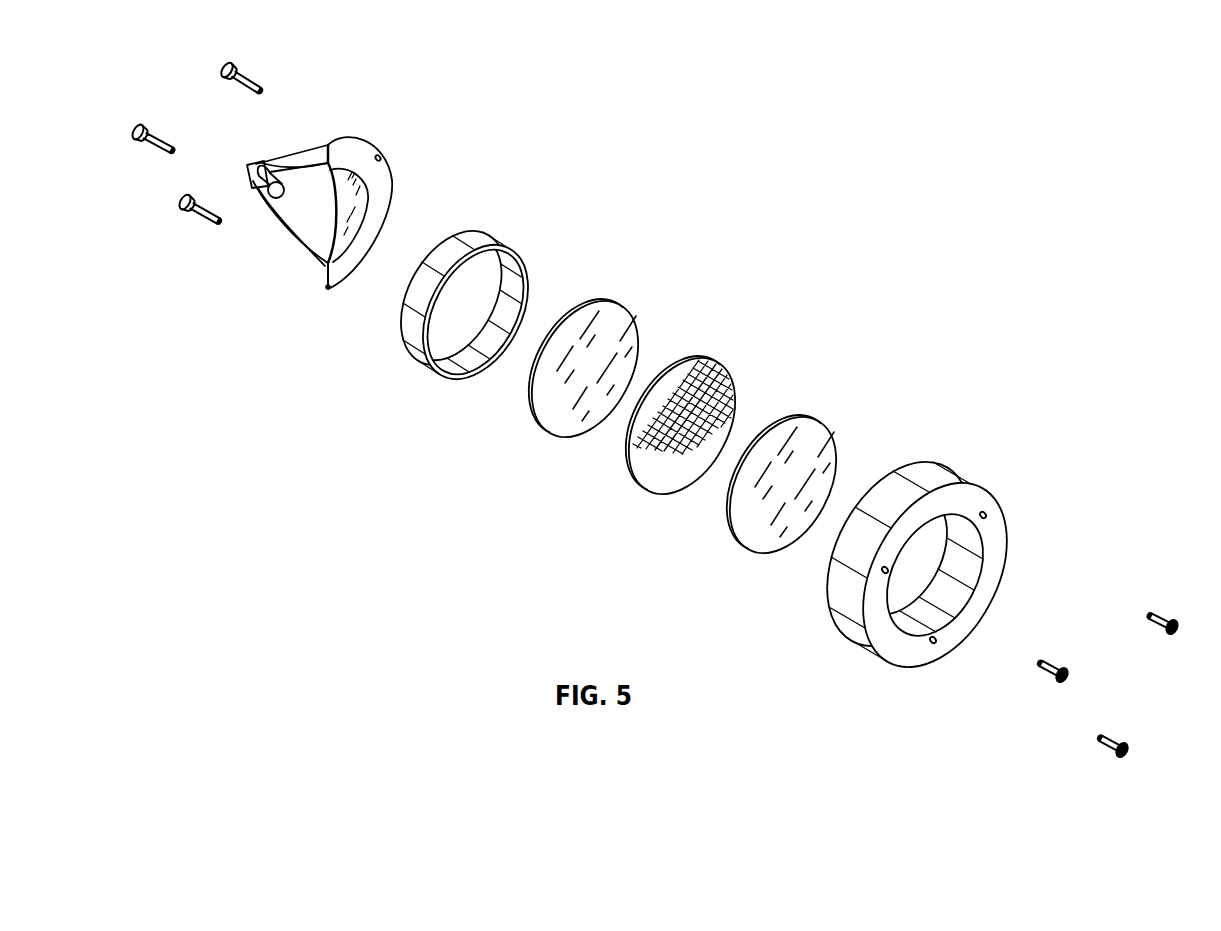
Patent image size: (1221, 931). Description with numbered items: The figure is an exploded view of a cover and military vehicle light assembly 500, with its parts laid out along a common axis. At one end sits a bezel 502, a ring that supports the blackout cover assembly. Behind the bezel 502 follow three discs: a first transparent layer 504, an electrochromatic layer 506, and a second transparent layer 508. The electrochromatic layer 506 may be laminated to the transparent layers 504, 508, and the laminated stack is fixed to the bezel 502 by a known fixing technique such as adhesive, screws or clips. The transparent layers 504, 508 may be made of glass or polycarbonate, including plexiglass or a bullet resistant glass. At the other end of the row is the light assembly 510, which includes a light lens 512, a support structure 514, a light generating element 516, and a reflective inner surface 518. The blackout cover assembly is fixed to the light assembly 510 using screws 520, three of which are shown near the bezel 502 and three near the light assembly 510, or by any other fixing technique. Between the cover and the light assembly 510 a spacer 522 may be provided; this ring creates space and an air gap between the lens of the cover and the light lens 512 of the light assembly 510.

The cover and military vehicle light assembly 500 is at (995, 237).
The bezel 502 is at (952, 478).
The first transparent layer 504 is at (815, 427).
The electrochromatic layer 506 is at (722, 369).
The second transparent layer 508 is at (615, 312).
The light assembly 510 is at (415, 138).
The light lens 512 is at (363, 209).
The support structure 514 is at (355, 156).
The light generating element 516 is at (281, 180).
The reflective inner surface 518 is at (307, 215).
The screws 520 is at (1163, 613).
The spacer 522 is at (487, 237).